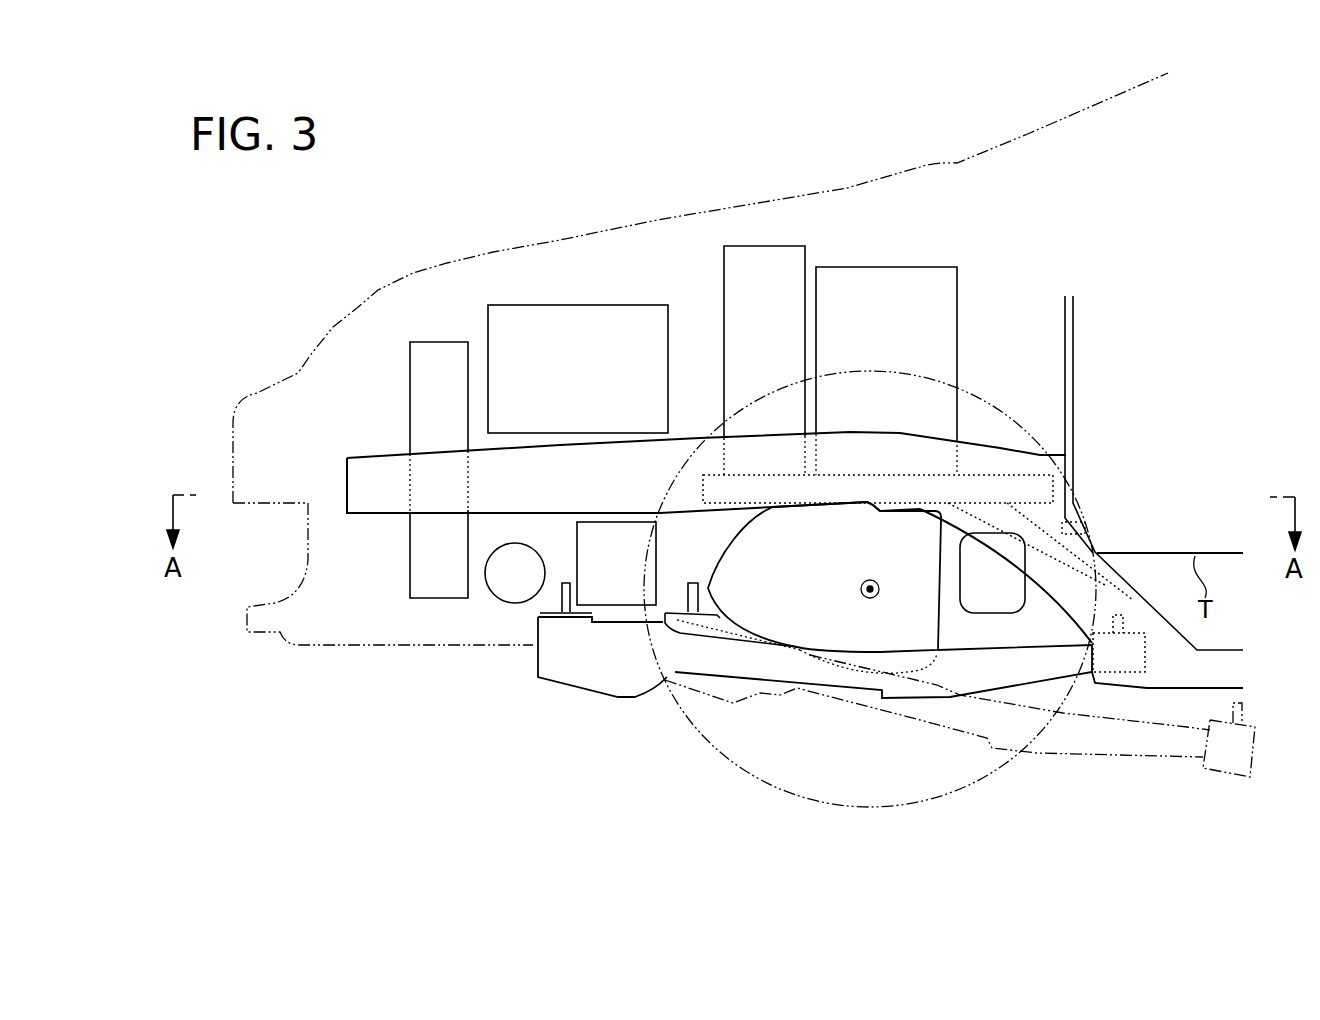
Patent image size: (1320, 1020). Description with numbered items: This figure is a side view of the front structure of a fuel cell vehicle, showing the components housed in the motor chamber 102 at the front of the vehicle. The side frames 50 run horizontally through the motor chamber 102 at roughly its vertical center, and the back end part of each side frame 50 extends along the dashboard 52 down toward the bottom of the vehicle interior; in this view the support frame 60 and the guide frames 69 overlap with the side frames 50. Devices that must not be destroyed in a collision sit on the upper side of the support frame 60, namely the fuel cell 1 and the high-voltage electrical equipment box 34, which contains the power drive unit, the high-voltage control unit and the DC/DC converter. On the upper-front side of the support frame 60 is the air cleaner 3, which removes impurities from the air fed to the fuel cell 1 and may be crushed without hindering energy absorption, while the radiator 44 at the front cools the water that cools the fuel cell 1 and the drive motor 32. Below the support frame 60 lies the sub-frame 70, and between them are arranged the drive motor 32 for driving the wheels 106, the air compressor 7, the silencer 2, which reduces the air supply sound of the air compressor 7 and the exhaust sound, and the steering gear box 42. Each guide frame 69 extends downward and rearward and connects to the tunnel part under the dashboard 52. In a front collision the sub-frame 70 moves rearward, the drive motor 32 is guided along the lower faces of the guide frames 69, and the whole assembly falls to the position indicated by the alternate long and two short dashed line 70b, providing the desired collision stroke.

The fuel cell 1 is at (898, 354).
The silencer 2 is at (526, 593).
The air cleaner 3 is at (588, 388).
The air compressor 7 is at (627, 583).
The drive motor 32 is at (816, 593).
The high-voltage electrical equipment box 34 is at (782, 354).
The steering gear box 42 is at (1010, 593).
The radiator 44 is at (458, 416).
The side frame 50 is at (388, 456).
The dashboard 52 is at (1074, 395).
The support frame 60 is at (1003, 474).
The guide frame 69 is at (1085, 528).
The sub-frame 70 is at (642, 688).
The alternate long and two short dashed line 70b is at (1032, 757).
The motor chamber 102 is at (658, 220).
The wheels 106 is at (793, 797).